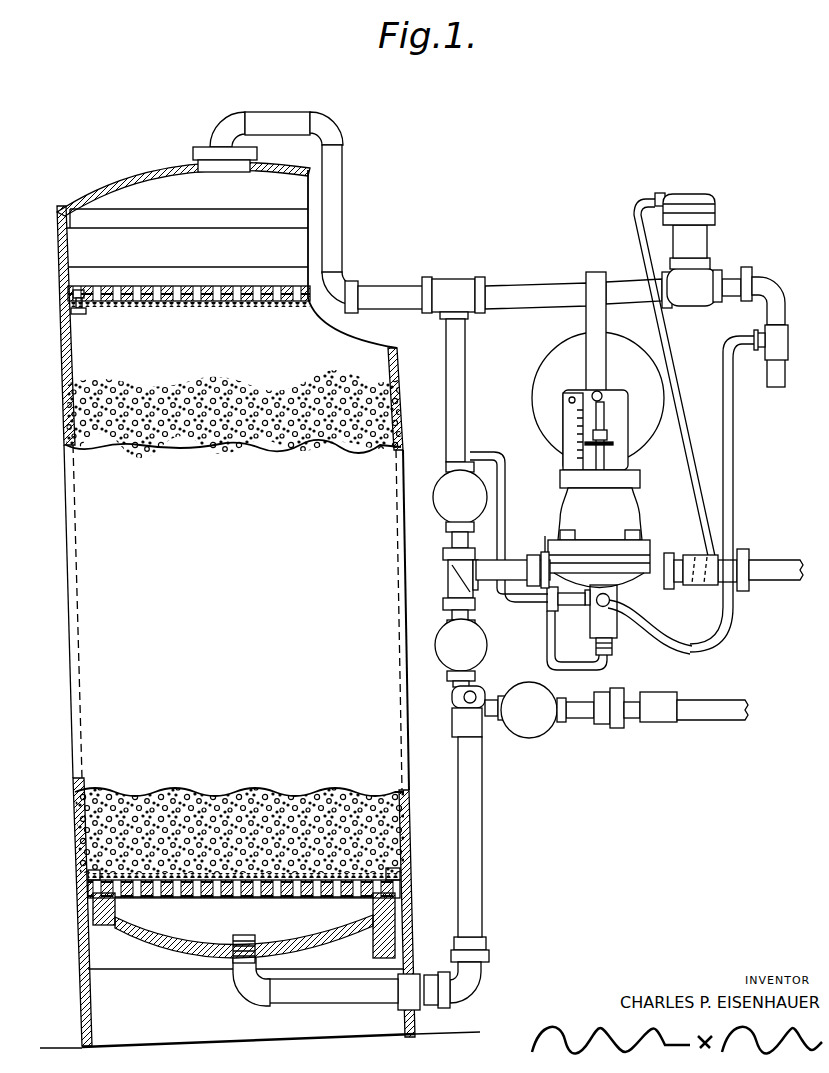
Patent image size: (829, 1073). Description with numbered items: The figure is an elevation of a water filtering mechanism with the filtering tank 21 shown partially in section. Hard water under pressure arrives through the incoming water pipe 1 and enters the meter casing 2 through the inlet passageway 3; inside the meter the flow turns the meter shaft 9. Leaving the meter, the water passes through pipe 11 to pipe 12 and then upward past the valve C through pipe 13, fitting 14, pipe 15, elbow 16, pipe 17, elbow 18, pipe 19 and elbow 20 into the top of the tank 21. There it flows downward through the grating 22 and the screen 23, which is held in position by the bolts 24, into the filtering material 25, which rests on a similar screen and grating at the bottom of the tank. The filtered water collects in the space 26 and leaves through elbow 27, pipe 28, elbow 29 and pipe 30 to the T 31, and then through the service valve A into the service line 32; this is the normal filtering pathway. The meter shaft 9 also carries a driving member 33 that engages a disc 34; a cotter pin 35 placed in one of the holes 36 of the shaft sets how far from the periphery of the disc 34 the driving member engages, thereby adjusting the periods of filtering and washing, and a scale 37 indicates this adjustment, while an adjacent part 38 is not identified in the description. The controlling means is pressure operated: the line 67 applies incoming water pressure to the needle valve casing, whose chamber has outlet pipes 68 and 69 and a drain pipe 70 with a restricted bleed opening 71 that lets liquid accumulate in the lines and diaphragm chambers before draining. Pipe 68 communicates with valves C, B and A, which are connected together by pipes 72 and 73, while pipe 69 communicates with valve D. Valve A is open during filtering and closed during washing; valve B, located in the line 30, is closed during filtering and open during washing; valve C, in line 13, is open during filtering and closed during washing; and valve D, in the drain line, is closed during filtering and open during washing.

The incoming water pipe 1 is at (782, 557).
The meter casing 2 is at (642, 528).
The inlet passageway 3 is at (663, 554).
The meter shaft 9 is at (599, 499).
The pipe 11 is at (544, 550).
The pipe 12 is at (514, 567).
The pipe 13 is at (466, 387).
The fitting 14 is at (457, 278).
The pipe 15 is at (381, 285).
The elbow 16 is at (343, 277).
The pipe 17 is at (336, 188).
The elbow 18 is at (329, 125).
The pipe 19 is at (280, 121).
The elbow 20 is at (219, 131).
The tank 21 is at (137, 147).
The grating 22 is at (172, 286).
The screen 23 is at (208, 286).
The bolts 24 is at (85, 290).
The filtering material 25 is at (186, 381).
The space 26 is at (199, 917).
The elbow 27 is at (240, 990).
The pipe 28 is at (334, 999).
The elbow 29 is at (487, 981).
The pipe 30 is at (471, 835).
The T 31 is at (455, 728).
The service line 32 is at (712, 700).
The driving member 33 is at (614, 443).
The disc 34 is at (549, 355).
The cotter pin 35 is at (606, 434).
The holes 36 is at (602, 418).
The scale 37 is at (562, 416).
The frame 38 is at (562, 393).
The line 67 is at (547, 644).
The outlet pipe 68 is at (534, 603).
The outlet pipe 69 is at (650, 598).
The drain pipe 70 is at (729, 627).
The restricted bleed opening 71 is at (767, 317).
The pipe 72 is at (449, 578).
The pipe 73 is at (455, 699).
The service valve A is at (523, 728).
The valve B is at (482, 654).
The valve C is at (480, 498).
The valve D is at (704, 241).